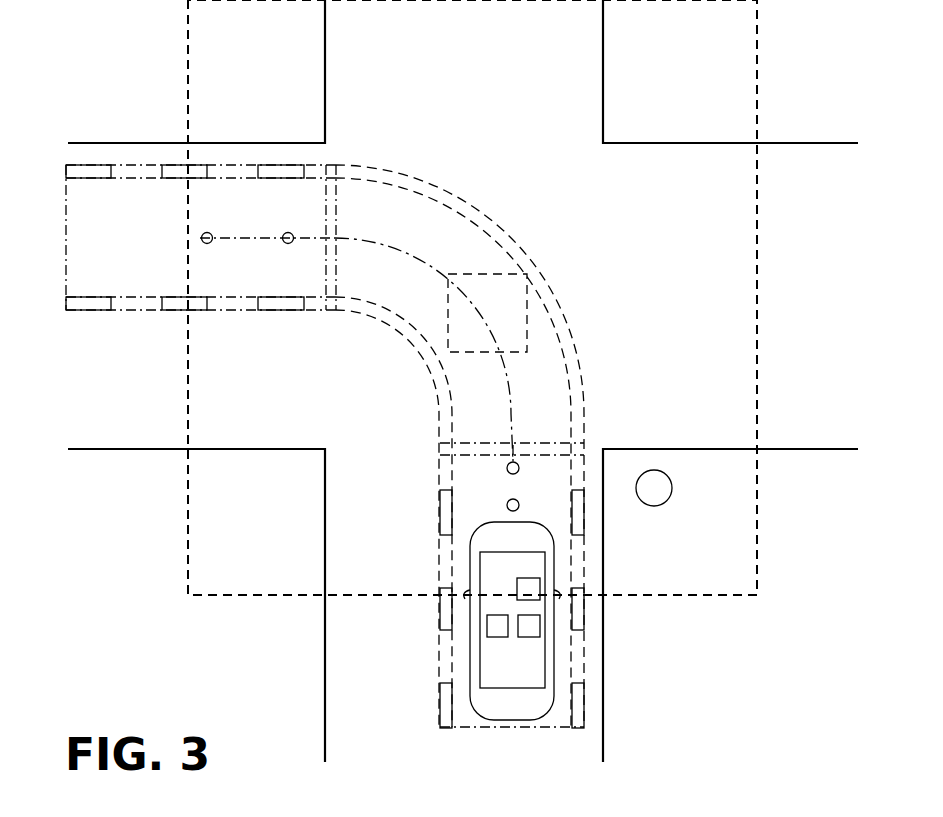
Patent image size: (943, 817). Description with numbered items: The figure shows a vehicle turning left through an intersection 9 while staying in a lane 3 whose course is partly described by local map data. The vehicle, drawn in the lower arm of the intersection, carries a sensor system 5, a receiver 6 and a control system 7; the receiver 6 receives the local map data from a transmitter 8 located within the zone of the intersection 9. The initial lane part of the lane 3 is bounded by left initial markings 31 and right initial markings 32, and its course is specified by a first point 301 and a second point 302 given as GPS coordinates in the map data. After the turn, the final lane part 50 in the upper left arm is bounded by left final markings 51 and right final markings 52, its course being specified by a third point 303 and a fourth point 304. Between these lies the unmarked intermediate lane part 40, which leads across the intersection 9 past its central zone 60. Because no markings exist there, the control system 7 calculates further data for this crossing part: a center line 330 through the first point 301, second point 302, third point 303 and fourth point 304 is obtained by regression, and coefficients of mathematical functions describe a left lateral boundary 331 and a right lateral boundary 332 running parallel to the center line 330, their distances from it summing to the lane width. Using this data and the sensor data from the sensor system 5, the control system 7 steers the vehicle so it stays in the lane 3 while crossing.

The intersection 9 is at (186, 58).
The lane 3 is at (52, 165).
The final lane part 50 is at (70, 228).
The right final markings 52 is at (90, 165).
The left final markings 51 is at (88, 310).
The fourth point 304 is at (207, 244).
The third point 303 is at (288, 244).
The intermediate lane part 40 is at (487, 227).
The right lateral boundary 332 is at (433, 208).
The left lateral boundary 331 is at (441, 408).
The center line 330 is at (490, 364).
The central zone 60 is at (548, 322).
The second point 302 is at (506, 468).
The first point 301 is at (506, 505).
The left initial markings 31 is at (440, 693).
The right initial markings 32 is at (584, 500).
The sensor system 5 is at (524, 591).
The receiver 6 is at (529, 626).
The control system 7 is at (498, 626).
The transmitter 8 is at (657, 489).